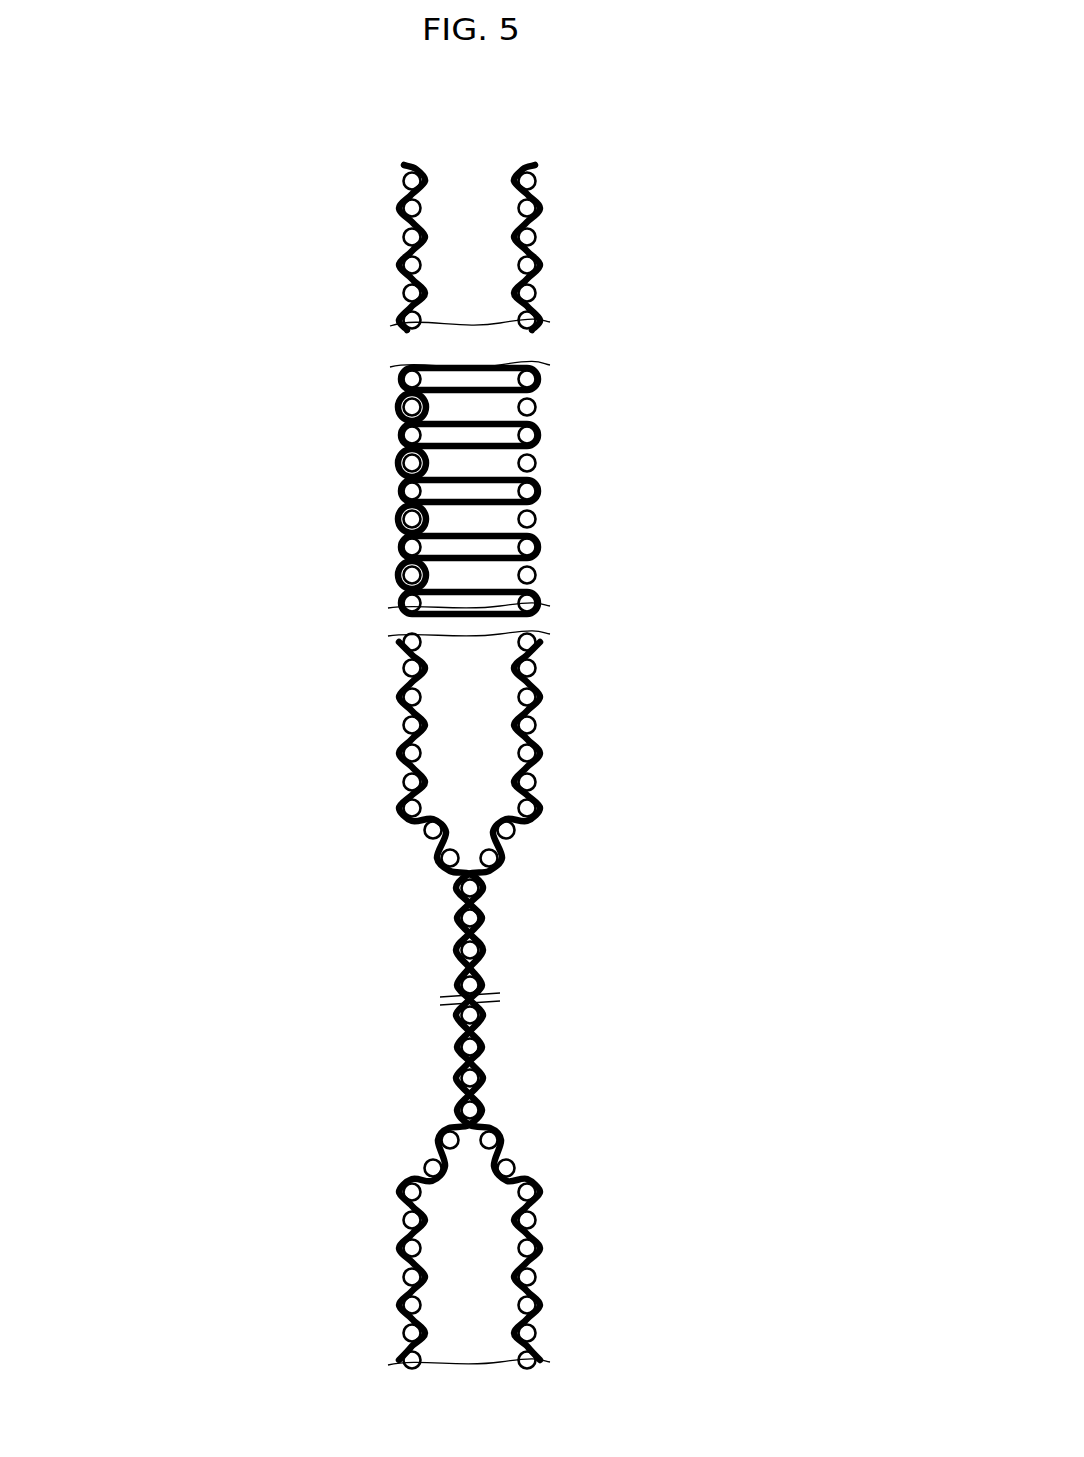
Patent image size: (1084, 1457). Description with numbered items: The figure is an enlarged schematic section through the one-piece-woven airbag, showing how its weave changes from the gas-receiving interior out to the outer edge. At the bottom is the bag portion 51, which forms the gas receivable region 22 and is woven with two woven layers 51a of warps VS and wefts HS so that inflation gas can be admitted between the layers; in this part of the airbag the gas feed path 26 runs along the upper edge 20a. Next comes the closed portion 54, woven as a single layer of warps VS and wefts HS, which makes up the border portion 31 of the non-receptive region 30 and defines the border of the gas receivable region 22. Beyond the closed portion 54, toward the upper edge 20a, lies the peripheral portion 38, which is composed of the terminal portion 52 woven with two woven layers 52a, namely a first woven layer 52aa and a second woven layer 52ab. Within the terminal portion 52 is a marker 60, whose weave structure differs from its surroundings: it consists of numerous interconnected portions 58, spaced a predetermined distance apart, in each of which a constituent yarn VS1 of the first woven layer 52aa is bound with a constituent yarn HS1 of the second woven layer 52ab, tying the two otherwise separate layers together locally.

The warp VS is at (428, 172).
The weft HS is at (403, 178).
The constituent yarn of second woven layer HS1 is at (402, 376).
The constituent yarn of first woven layer VS1 is at (398, 405).
The terminal portion 52 is at (577, 470).
The woven layers of terminal portion 52a is at (548, 225).
The first woven layer 52aa is at (553, 494).
The second woven layer 52ab is at (381, 493).
The interconnected portion 58 is at (390, 422).
The marker 60 is at (262, 483).
The peripheral portion 38 is at (372, 258).
The upper edge 20a is at (247, 523).
The border portion 31 is at (530, 1043).
The closed portion 54 is at (639, 999).
The non-receptive region 30 is at (639, 999).
The gas feed path 26 is at (636, 1120).
The gas receivable region 22 is at (655, 999).
The bag portion 51 is at (750, 1232).
The woven layers of bag portion 51a is at (545, 1275).